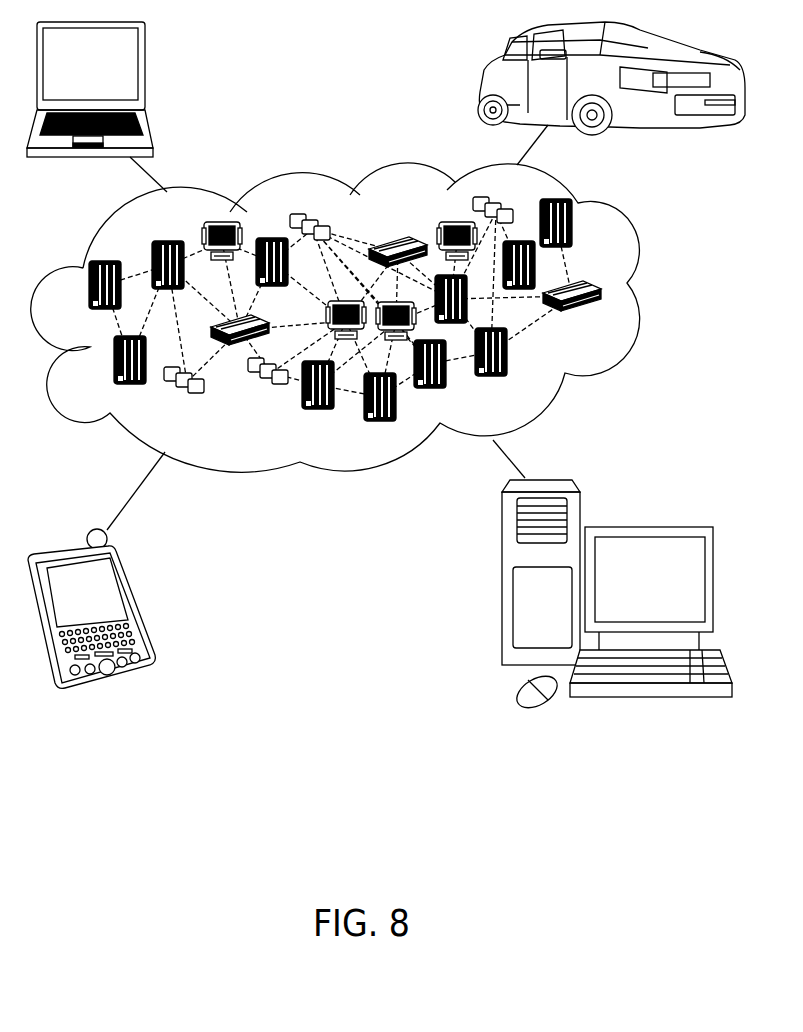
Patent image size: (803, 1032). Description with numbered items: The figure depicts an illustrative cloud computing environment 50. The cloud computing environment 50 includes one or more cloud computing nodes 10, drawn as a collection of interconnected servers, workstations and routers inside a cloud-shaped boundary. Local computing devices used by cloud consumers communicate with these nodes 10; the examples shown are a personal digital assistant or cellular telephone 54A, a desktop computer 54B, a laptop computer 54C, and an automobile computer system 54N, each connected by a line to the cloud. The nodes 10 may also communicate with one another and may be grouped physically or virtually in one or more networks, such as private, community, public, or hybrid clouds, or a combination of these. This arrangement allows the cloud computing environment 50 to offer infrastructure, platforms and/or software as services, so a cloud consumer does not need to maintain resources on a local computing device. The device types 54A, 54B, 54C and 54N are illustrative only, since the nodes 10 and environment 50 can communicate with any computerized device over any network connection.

The cloud computing nodes 10 is at (640, 337).
The cloud computing environment 50 is at (650, 294).
The personal digital assistant or cellular telephone 54A is at (137, 603).
The desktop computer 54B is at (648, 527).
The laptop computer 54C is at (145, 73).
The automobile computer system 54N is at (480, 87).